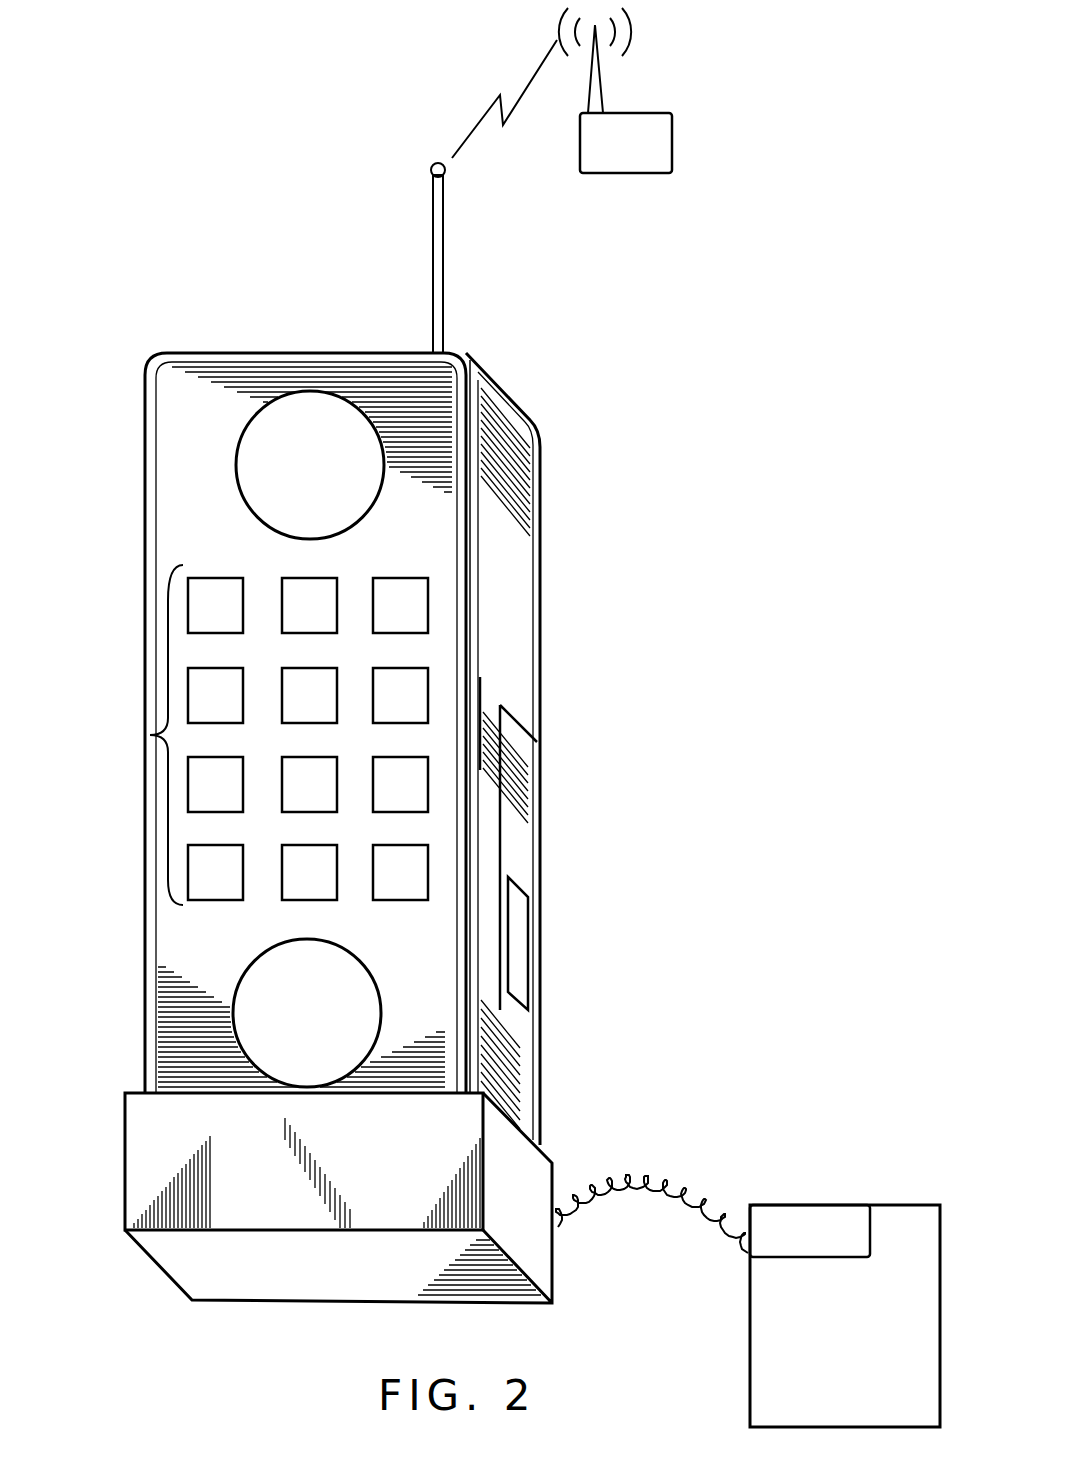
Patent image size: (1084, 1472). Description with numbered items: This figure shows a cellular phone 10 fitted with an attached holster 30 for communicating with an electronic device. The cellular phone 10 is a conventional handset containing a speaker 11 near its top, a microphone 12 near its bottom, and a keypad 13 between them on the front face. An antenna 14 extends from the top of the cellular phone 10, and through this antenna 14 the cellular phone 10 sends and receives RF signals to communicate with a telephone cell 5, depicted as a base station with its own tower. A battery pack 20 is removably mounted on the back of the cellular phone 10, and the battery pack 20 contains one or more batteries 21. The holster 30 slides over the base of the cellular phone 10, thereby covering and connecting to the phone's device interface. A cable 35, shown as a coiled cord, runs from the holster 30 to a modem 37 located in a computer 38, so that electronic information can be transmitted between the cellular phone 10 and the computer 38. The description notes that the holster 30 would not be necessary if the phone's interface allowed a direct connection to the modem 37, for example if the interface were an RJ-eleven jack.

The telephone cell 5 is at (672, 145).
The cellular phone 10 is at (170, 353).
The speaker 11 is at (240, 445).
The microphone 12 is at (240, 985).
The keypad 13 is at (150, 735).
The antenna 14 is at (443, 250).
The battery pack 20 is at (540, 820).
The battery 21 is at (520, 962).
The holster 30 is at (130, 1130).
The cable 35 is at (676, 1180).
The modem 37 is at (812, 1205).
The computer 38 is at (750, 1372).